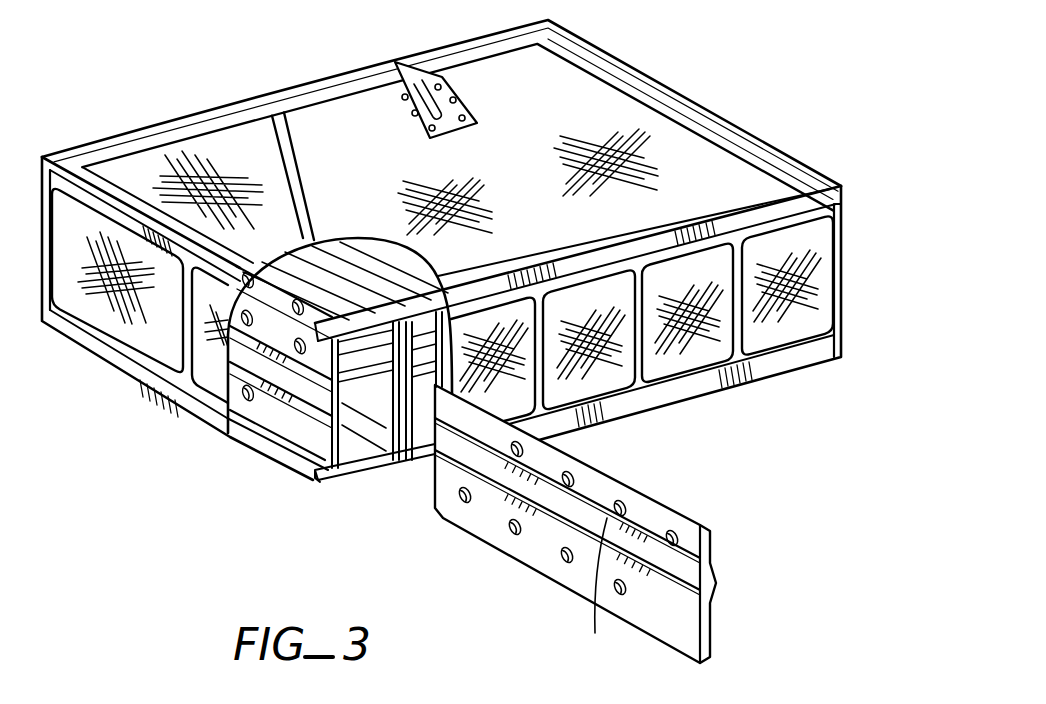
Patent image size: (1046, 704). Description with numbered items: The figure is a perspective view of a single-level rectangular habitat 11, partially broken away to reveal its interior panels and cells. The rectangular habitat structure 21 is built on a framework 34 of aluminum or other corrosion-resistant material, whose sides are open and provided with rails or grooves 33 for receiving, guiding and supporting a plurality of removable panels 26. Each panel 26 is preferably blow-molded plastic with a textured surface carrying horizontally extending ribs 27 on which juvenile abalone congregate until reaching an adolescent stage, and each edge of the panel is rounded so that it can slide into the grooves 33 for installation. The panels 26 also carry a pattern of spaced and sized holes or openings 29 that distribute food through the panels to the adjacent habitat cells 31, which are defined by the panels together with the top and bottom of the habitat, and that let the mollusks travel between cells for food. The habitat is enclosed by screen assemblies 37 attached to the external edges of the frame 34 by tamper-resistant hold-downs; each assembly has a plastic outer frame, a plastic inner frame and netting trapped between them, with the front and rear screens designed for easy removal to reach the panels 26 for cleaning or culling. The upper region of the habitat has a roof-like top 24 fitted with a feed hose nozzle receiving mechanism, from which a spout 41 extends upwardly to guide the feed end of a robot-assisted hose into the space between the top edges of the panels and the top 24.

The habitat 11 is at (222, 93).
The rectangular habitat structure 21 is at (854, 186).
The roof-like top 24 is at (581, 53).
The removable panels 26 is at (290, 418).
The horizontally extending ribs 27 is at (658, 578).
The holes or openings 29 is at (623, 505).
The habitat cells 31 is at (400, 430).
The grooves or rails 33 is at (350, 480).
The framework 34 is at (798, 361).
The screen assemblies 37 is at (672, 147).
The spout 41 is at (407, 78).